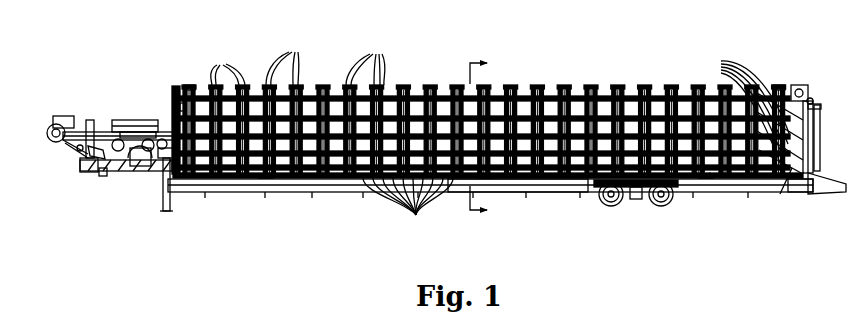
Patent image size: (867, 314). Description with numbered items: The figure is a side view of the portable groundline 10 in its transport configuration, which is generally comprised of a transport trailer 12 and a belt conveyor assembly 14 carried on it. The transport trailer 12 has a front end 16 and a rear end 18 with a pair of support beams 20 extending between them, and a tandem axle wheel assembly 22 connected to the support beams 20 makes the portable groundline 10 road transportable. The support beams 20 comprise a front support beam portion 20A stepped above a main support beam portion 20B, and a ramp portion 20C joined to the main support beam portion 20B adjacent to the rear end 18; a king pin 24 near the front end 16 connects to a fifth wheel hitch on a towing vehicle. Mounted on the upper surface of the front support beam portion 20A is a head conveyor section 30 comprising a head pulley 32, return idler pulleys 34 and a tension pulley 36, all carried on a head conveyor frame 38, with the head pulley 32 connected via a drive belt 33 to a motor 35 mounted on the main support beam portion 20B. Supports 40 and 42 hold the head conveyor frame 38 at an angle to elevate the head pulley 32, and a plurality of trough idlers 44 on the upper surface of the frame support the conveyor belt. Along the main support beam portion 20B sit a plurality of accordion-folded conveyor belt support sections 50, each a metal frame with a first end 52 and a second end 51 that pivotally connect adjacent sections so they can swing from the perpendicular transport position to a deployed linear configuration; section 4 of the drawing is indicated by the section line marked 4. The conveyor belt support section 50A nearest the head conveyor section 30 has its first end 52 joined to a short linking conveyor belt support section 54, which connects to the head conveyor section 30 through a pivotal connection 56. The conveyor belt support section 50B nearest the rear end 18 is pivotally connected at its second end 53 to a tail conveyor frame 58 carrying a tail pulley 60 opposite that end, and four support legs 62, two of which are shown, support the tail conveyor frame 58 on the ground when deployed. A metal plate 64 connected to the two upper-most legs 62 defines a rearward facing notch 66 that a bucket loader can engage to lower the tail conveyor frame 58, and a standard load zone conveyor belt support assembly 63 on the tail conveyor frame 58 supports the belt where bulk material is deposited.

The section line 4- 4 is at (487, 138).
The portable groundline 10 is at (526, 53).
The transport trailer 12 is at (342, 187).
The belt conveyor assembly 14 is at (617, 72).
The front end 16 is at (66, 165).
The rear end 18 is at (820, 167).
The support beams 20 is at (715, 181).
The front support beam portion 20A is at (112, 165).
The main support beam portion 20B is at (457, 182).
The ramp portion 20C is at (813, 184).
The tandem axle wheel assembly 22 is at (635, 198).
The king pin 24 is at (82, 164).
The head conveyor section 30 is at (82, 118).
The head pulley 32 is at (43, 119).
The drive belt 33 is at (53, 137).
The return idler pulleys 34 is at (110, 131).
The motor 35 is at (95, 168).
The tension pulley 36 is at (143, 154).
The head conveyor frame 38 is at (88, 116).
The support 40 is at (73, 151).
The support 42 is at (163, 145).
The trough idlers 44 is at (79, 113).
The conveyor belt support sections 50 is at (256, 61).
The conveyor belt support section 50A is at (187, 78).
The conveyor belt support section 50B is at (773, 78).
The second end 51 is at (408, 207).
The first end 52 is at (365, 62).
The second end 53 is at (778, 165).
The linking conveyor belt support section 54 is at (168, 86).
The pivotal connection 56 is at (176, 100).
The tail conveyor frame 58 is at (757, 78).
The tail pulley 60 is at (794, 77).
The support legs 62 is at (812, 160).
The load zone conveyor belt support assembly 63 is at (746, 112).
The metal plate 64 is at (804, 92).
The notch 66 is at (812, 98).